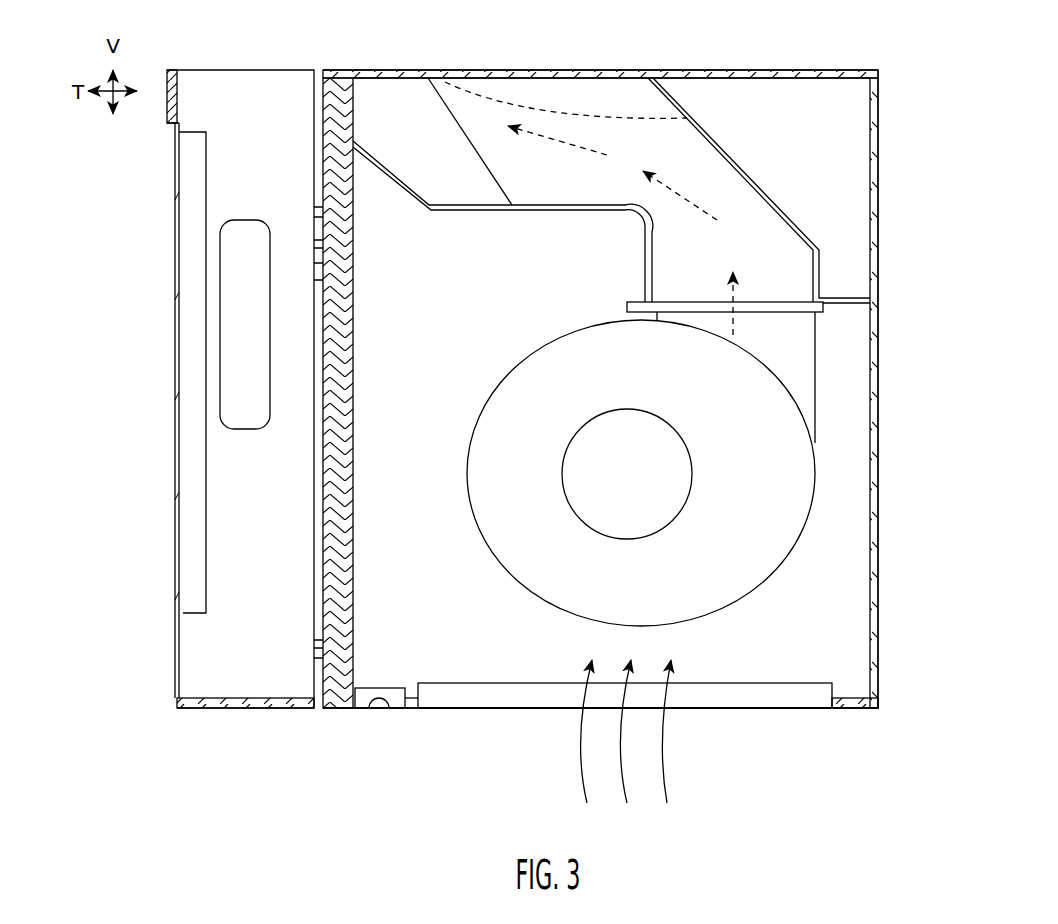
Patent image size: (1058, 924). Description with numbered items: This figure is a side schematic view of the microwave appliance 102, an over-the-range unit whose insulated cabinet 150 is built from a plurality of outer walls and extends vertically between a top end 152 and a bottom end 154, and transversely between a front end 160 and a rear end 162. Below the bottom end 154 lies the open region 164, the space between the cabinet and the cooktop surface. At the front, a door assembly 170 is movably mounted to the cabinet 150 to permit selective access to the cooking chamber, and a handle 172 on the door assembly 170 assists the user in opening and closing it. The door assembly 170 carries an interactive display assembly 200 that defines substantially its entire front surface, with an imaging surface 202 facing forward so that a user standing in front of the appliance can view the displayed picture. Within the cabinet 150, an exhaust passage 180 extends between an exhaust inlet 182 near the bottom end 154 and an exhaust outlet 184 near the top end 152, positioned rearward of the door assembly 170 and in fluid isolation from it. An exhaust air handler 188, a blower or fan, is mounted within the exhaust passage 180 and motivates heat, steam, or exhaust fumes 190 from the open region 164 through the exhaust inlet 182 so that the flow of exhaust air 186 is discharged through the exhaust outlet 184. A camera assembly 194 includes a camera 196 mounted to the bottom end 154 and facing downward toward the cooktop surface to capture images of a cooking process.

The microwave appliance 102 is at (915, 100).
The insulated cabinet 150 is at (786, 69).
The top end 152 is at (703, 60).
The bottom end 154 is at (848, 727).
The front end 160 is at (317, 697).
The rear end 162 is at (897, 304).
The open region 164 is at (721, 811).
The door assembly 170 is at (171, 389).
The handle 172 is at (250, 220).
The exhaust passage 180 is at (768, 217).
The exhaust inlet 182 is at (746, 712).
The exhaust outlet 184 is at (383, 66).
The flow of exhaust air 186 is at (690, 193).
The exhaust air handler 188 is at (815, 483).
The exhaust fumes 190 is at (578, 745).
The camera assembly 194 is at (395, 683).
The camera 196 is at (379, 712).
The interactive display assembly 200 is at (192, 440).
The imaging surface 202 is at (173, 410).